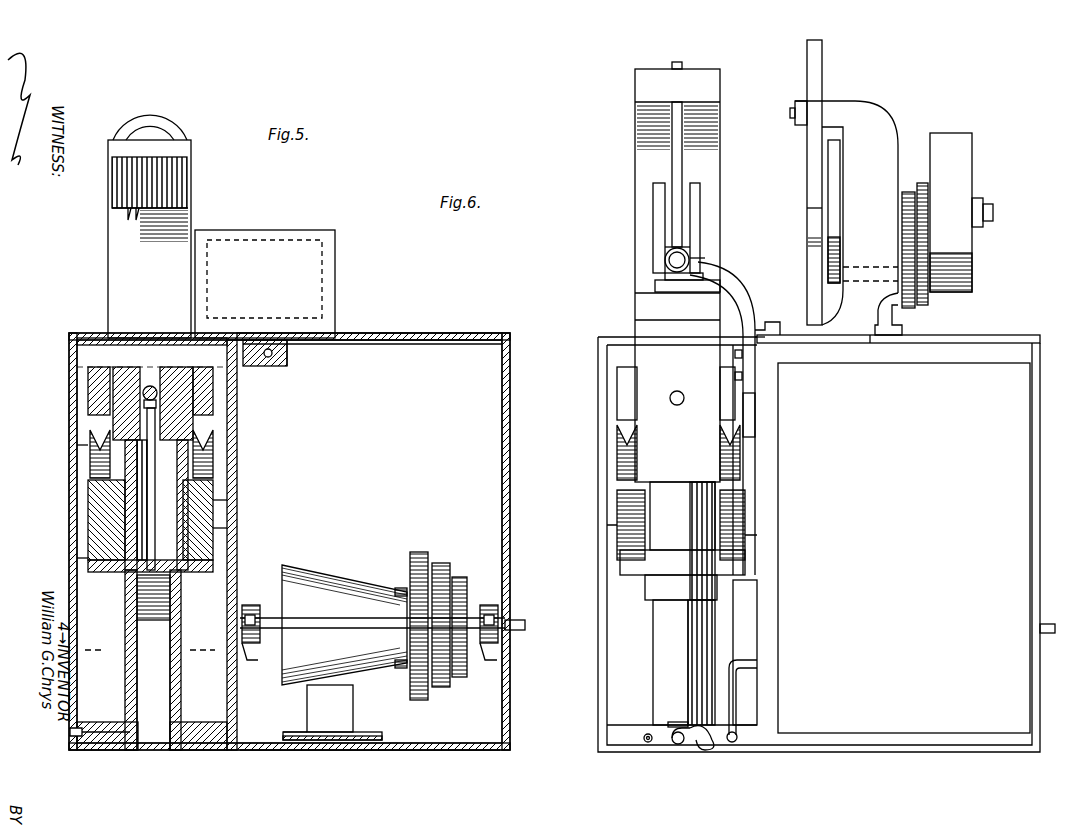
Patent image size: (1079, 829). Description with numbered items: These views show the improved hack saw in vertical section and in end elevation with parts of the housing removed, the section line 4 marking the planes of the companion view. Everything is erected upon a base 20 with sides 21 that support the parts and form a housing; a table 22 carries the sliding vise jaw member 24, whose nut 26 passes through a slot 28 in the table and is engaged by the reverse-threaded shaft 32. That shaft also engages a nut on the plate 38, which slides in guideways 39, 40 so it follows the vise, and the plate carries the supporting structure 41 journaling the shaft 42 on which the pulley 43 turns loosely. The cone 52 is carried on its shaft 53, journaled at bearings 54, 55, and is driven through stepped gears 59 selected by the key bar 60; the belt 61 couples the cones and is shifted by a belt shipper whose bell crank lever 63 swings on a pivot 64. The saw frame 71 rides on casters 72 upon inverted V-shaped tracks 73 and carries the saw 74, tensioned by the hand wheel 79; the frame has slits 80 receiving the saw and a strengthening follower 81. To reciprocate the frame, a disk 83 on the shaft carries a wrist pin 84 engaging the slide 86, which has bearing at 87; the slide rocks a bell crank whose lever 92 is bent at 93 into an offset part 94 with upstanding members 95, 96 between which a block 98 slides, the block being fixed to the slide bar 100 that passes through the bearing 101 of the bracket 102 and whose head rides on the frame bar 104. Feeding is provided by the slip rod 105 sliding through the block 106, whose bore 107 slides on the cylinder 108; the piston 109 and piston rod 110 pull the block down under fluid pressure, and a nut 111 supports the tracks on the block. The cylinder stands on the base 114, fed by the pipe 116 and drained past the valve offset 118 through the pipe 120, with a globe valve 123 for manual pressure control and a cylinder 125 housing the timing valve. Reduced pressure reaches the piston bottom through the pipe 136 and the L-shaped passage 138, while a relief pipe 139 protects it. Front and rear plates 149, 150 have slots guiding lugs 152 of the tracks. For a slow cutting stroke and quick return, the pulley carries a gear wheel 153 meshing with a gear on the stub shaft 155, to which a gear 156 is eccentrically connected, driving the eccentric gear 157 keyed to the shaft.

In FIG. 5, the line 4— 4 is at (526, 374).
In FIG. 5, the base 20 is at (287, 750).
In FIG. 5, the sides 21 is at (455, 380).
In FIG. 5, the table 22 is at (345, 337).
In FIG. 6, the table 22 is at (948, 343).
In FIG. 5, the jaw member 24 is at (306, 276).
In FIG. 5, the nut 26 is at (287, 366).
In FIG. 5, the slot 28 is at (300, 345).
In FIG. 5, the shaft 32 is at (268, 358).
In FIG. 6, the plate 38 is at (783, 330).
In FIG. 6, the guideway 39 is at (757, 332).
In FIG. 6, the guideway 40 is at (900, 332).
In FIG. 6, the supporting structure 41 is at (868, 345).
In FIG. 6, the shaft 42 is at (993, 213).
In FIG. 6, the pulley 43 is at (960, 148).
In FIG. 5, the cone 52 is at (310, 578).
In FIG. 5, the shaft 53 is at (262, 610).
In FIG. 5, the bearing 54 is at (497, 612).
In FIG. 5, the bearing 55 is at (256, 660).
In FIG. 5, the stepped gears 59 is at (460, 575).
In FIG. 5, the bar 60 is at (518, 628).
In FIG. 6, the bar 60 is at (1048, 624).
In FIG. 5, the belt 61 is at (399, 588).
In FIG. 5, the bell crank lever 63 is at (340, 740).
In FIG. 5, the pivot 64 is at (292, 732).
In FIG. 5, the saw frame 71 is at (118, 298).
In FIG. 6, the saw frame 71 is at (716, 212).
In FIG. 5, the casters 72 is at (92, 448).
In FIG. 6, the casters 72 is at (625, 445).
In FIG. 5, the tracks 73 is at (100, 522).
In FIG. 6, the tracks 73 is at (625, 495).
In FIG. 5, the saw 74 is at (176, 213).
In FIG. 5, the hand wheel 79 is at (143, 124).
In FIG. 5, the slits 80 is at (138, 220).
In FIG. 5, the follower 81 is at (170, 182).
In FIG. 6, the disk 83 is at (828, 150).
In FIG. 6, the wrist pin 84 is at (833, 216).
In FIG. 6, the slide 86 is at (808, 186).
In FIG. 6, the bearing 87 is at (797, 108).
In FIG. 6, the lever 92 is at (750, 418).
In FIG. 6, the bend 93 is at (738, 300).
In FIG. 6, the offset part 94 is at (660, 287).
In FIG. 6, the upstanding member 95 is at (700, 233).
In FIG. 6, the upstanding member 96 is at (655, 226).
In FIG. 6, the block 98 is at (668, 250).
In FIG. 6, the slide bar 100 is at (670, 262).
In FIG. 6, the bearing 101 is at (692, 262).
In FIG. 6, the bracket 102 is at (725, 290).
In FIG. 6, the bar 104 is at (672, 146).
In FIG. 5, the slip rod 105 is at (150, 385).
In FIG. 6, the slip rod 105 is at (680, 392).
In FIG. 5, the block 106 is at (140, 375).
In FIG. 6, the block 106 is at (640, 360).
In FIG. 5, the bore 107 is at (235, 528).
In FIG. 5, the cylinder 108 is at (181, 690).
In FIG. 5, the piston 109 is at (150, 600).
In FIG. 5, the piston rod 110 is at (150, 520).
In FIG. 5, the nut 111 is at (102, 572).
In FIG. 6, the nut 111 is at (642, 572).
In FIG. 5, the base 114 is at (212, 745).
In FIG. 6, the base 114 is at (618, 748).
In FIG. 6, the pipe 116 is at (678, 746).
In FIG. 6, the offset 118 is at (660, 668).
In FIG. 6, the pipe 120 is at (648, 744).
In FIG. 6, the globe valve 123 is at (668, 722).
In FIG. 6, the cylinder 125 is at (742, 627).
In FIG. 6, the pipe 136 is at (736, 735).
In FIG. 5, the L-shaped passage 138 is at (118, 745).
In FIG. 6, the relief pipe 139 is at (708, 752).
In FIG. 5, the front plate 149 is at (85, 558).
In FIG. 6, the front plate 149 is at (608, 590).
In FIG. 5, the rear plate 150 is at (232, 445).
In FIG. 5, the lugs 152 is at (235, 500).
In FIG. 6, the lugs 152 is at (625, 525).
In FIG. 6, the gear wheel 153 is at (925, 192).
In FIG. 6, the stub shaft 155 is at (870, 268).
In FIG. 6, the gear 156 is at (885, 305).
In FIG. 6, the gear 157 is at (903, 210).